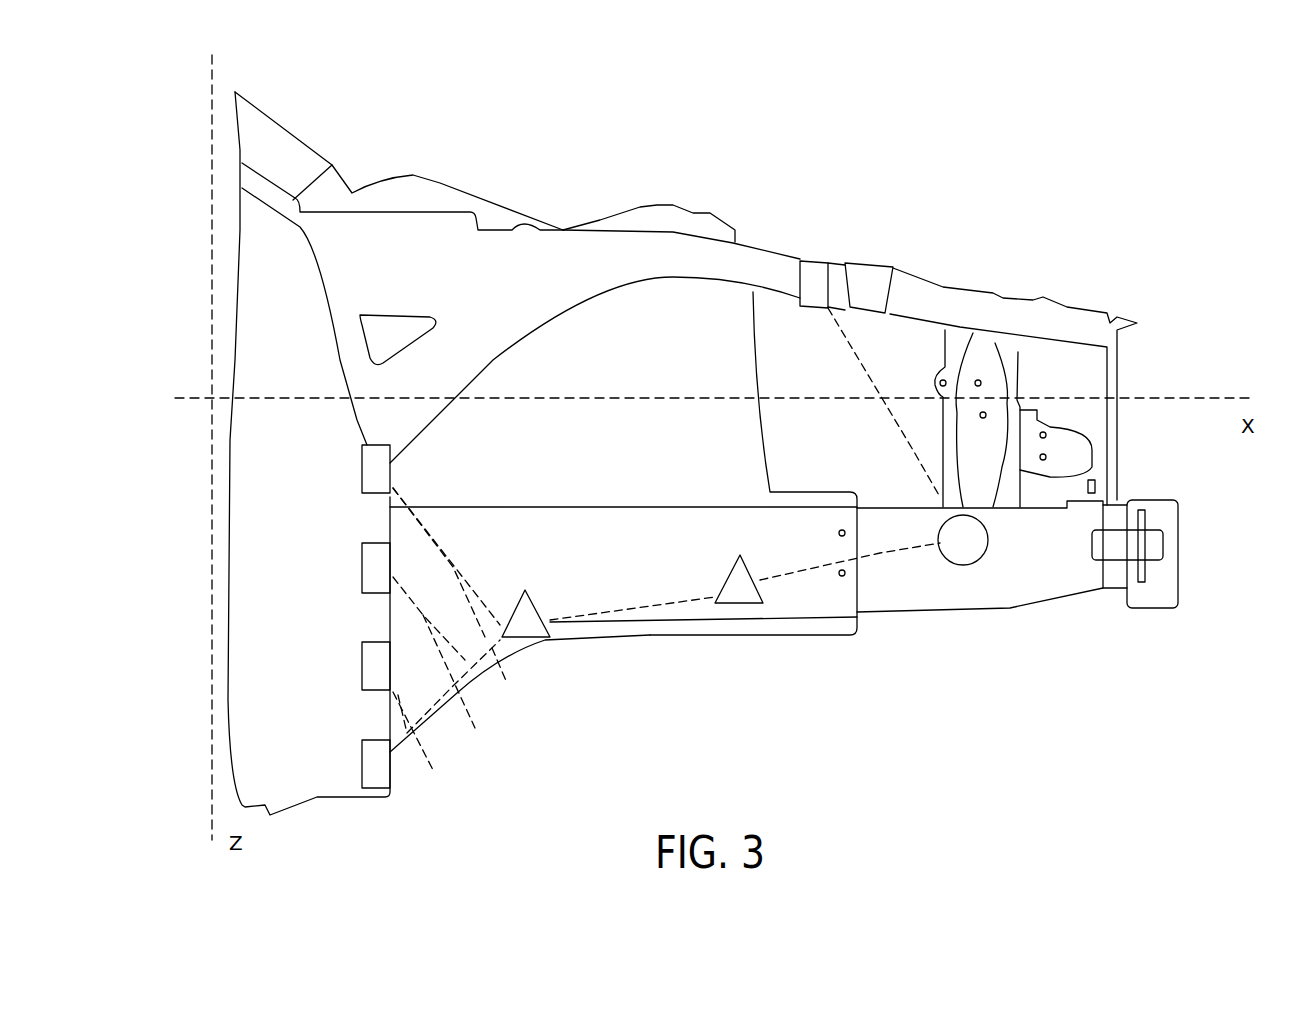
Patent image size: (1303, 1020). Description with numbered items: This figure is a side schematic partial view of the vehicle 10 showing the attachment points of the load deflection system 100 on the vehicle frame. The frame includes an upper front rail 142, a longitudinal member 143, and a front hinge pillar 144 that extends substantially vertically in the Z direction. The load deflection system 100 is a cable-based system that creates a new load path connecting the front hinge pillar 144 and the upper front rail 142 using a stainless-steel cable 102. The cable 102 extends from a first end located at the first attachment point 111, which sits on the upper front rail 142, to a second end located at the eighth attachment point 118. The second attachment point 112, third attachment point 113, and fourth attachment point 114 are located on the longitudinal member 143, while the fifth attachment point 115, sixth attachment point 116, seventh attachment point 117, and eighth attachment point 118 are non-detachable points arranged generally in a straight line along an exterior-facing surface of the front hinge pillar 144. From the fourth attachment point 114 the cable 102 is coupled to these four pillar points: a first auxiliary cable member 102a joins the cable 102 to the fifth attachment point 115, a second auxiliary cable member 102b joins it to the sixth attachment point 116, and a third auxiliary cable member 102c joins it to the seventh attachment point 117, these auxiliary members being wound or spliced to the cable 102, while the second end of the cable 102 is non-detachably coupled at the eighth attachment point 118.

The vehicle 10 is at (1062, 205).
The load deflection system 100 is at (905, 683).
The cable 102 is at (597, 620).
The first auxiliary cable member 102a is at (508, 686).
The second auxiliary cable member 102b is at (458, 692).
The third auxiliary cable member 102c is at (423, 751).
The first attachment point 111 is at (813, 258).
The second attachment point 112 is at (977, 565).
The third attachment point 113 is at (743, 605).
The fourth attachment point 114 is at (547, 643).
The fifth attachment point 115 is at (362, 473).
The sixth attachment point 116 is at (362, 568).
The seventh attachment point 117 is at (362, 667).
The eighth attachment point 118 is at (362, 770).
The upper front rail 142 is at (905, 293).
The longitudinal member 143 is at (928, 592).
The front hinge pillar 144 is at (367, 702).